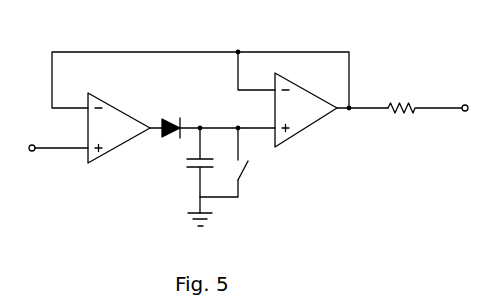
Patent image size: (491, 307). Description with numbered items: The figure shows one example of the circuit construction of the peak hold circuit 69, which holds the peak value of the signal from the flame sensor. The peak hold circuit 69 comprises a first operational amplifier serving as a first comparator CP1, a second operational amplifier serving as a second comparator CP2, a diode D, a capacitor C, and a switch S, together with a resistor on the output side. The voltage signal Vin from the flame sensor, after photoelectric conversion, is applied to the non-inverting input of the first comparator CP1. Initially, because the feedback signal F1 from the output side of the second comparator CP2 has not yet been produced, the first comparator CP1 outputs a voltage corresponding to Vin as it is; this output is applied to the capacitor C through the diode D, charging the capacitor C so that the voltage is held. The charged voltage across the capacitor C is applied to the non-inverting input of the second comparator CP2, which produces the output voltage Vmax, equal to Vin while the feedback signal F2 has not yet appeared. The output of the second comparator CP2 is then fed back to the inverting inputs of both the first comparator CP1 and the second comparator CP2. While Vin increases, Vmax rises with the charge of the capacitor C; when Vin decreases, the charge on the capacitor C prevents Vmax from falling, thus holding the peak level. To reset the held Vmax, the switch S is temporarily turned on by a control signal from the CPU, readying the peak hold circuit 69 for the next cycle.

The feedback signal F1 is at (145, 51).
The feedback signal F2 is at (298, 51).
The peak hold circuit 69 is at (243, 46).
The voltage signal Vin is at (62, 150).
The first comparator CP1 is at (120, 140).
The diode D is at (172, 118).
The capacitor C is at (188, 167).
The switch S is at (246, 172).
The second comparator CP2 is at (318, 120).
The output voltage Vmax is at (442, 110).